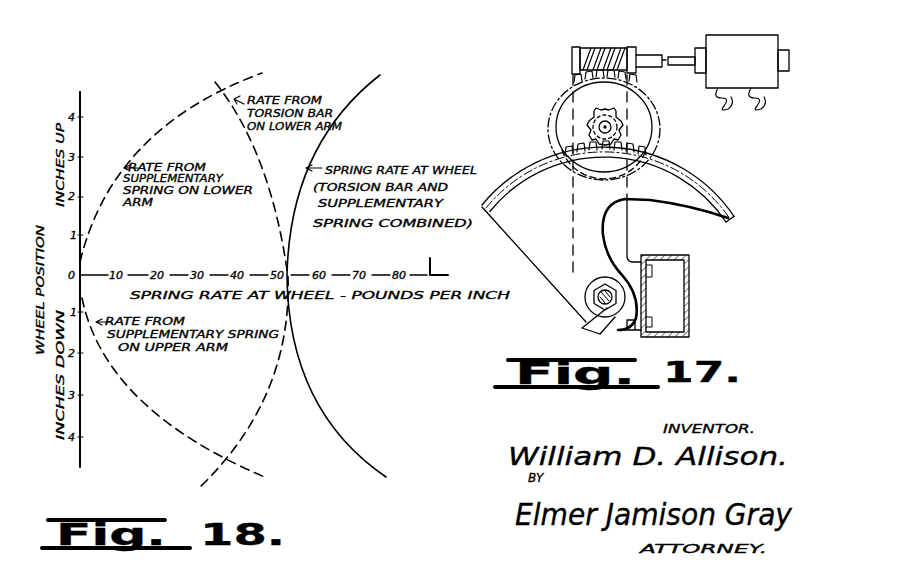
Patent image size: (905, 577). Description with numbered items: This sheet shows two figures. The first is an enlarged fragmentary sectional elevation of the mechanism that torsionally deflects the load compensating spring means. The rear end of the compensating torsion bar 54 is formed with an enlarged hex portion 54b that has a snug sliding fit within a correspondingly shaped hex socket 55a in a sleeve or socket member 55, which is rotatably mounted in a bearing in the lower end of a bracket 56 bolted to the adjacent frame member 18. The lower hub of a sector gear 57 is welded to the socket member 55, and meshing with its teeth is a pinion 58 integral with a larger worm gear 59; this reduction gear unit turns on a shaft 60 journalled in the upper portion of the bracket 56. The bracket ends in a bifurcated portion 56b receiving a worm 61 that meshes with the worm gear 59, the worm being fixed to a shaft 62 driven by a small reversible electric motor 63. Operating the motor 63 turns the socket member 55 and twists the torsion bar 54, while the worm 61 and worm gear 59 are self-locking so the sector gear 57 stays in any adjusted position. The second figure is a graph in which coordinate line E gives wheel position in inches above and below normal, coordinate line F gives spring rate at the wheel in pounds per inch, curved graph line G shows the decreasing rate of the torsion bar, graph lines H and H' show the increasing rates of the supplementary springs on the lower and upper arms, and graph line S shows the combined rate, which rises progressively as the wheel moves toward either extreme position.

In FIG. 17, the frame member 18 is at (690, 267).
In FIG. 17, the compensating torsion bar 54 is at (582, 324).
In FIG. 17, the enlarged hex portion 54b is at (612, 312).
In FIG. 17, the socket member 55 is at (583, 297).
In FIG. 17, the hex socket 55a is at (593, 298).
In FIG. 17, the bracket 56 is at (620, 227).
In FIG. 17, the bifurcated portion 56b is at (576, 47).
In FIG. 17, the sector gear 57 is at (690, 180).
In FIG. 17, the pinion 58 is at (614, 126).
In FIG. 17, the worm gear 59 is at (646, 89).
In FIG. 17, the shaft 60 is at (607, 110).
In FIG. 17, the worm 61 is at (624, 49).
In FIG. 17, the shaft 62 is at (648, 56).
In FIG. 17, the reversible electric motor 63 is at (725, 37).
In FIG. 18, the coordinate line E is at (83, 130).
In FIG. 18, the coordinate line F is at (430, 258).
In FIG. 18, the graph line G is at (257, 153).
In FIG. 18, the graph line H is at (171, 167).
In FIG. 18, the graph line H' is at (174, 388).
In FIG. 18, the graph line S is at (364, 95).